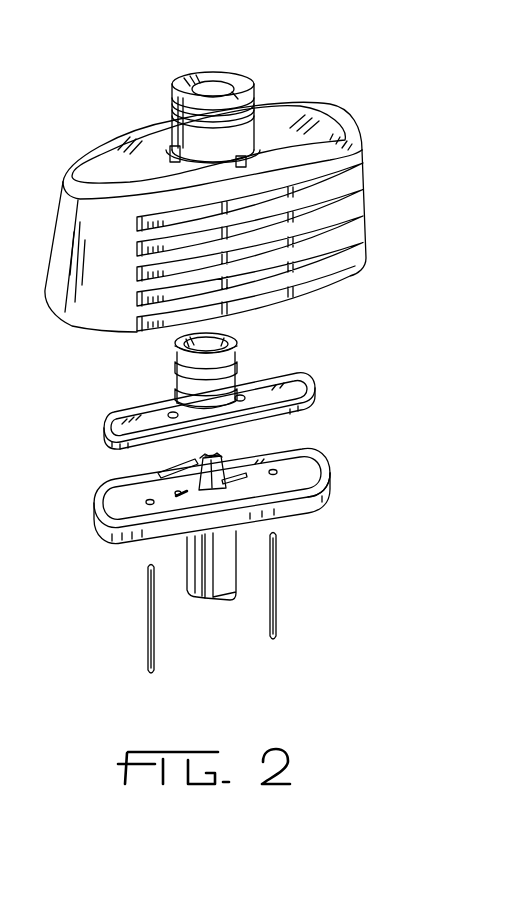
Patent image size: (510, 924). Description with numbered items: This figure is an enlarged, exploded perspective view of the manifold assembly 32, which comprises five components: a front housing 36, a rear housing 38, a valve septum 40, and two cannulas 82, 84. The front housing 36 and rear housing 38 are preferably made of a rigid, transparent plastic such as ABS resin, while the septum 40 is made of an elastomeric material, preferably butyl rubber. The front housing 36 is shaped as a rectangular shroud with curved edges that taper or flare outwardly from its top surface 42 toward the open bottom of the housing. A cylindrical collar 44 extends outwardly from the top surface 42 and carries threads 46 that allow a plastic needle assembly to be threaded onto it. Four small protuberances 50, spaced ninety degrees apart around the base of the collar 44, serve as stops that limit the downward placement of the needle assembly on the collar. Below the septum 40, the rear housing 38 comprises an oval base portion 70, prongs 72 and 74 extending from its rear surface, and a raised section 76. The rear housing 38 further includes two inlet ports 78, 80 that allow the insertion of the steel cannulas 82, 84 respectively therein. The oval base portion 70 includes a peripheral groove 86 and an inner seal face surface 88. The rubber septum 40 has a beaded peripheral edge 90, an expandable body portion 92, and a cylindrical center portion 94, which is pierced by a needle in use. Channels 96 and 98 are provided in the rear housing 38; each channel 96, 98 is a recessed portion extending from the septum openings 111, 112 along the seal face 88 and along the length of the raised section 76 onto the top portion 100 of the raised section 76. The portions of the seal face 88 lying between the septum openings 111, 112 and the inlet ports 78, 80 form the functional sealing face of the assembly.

The manifold assembly 32 is at (383, 58).
The front housing 36 is at (343, 110).
The rear housing 38 is at (103, 532).
The valve septum 40 is at (108, 430).
The top surface 42 is at (113, 168).
The cylindrical collar 44 is at (220, 69).
The threads 46 is at (173, 106).
The protuberances 50 is at (246, 152).
The oval base portion 70 is at (100, 520).
The prong 72 is at (225, 590).
The prong 74 is at (188, 573).
The raised section 76 is at (258, 458).
The inlet port 78 is at (165, 492).
The inlet port 80 is at (312, 500).
The cannula 82 is at (146, 627).
The cannula 84 is at (278, 582).
The peripheral groove 86 is at (112, 504).
The inner seal face surface 88 is at (302, 460).
The beaded peripheral edge 90 is at (306, 398).
The expandable body portion 92 is at (282, 382).
The cylindrical center portion 94 is at (238, 355).
The channel 96 is at (184, 470).
The channel 98 is at (274, 476).
The top portion 100 is at (210, 454).
The septum opening 111 is at (172, 413).
The septum opening 112 is at (242, 395).